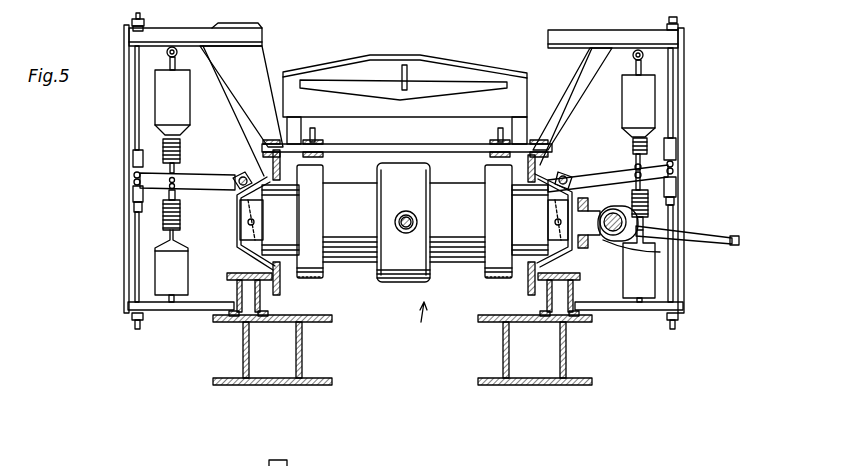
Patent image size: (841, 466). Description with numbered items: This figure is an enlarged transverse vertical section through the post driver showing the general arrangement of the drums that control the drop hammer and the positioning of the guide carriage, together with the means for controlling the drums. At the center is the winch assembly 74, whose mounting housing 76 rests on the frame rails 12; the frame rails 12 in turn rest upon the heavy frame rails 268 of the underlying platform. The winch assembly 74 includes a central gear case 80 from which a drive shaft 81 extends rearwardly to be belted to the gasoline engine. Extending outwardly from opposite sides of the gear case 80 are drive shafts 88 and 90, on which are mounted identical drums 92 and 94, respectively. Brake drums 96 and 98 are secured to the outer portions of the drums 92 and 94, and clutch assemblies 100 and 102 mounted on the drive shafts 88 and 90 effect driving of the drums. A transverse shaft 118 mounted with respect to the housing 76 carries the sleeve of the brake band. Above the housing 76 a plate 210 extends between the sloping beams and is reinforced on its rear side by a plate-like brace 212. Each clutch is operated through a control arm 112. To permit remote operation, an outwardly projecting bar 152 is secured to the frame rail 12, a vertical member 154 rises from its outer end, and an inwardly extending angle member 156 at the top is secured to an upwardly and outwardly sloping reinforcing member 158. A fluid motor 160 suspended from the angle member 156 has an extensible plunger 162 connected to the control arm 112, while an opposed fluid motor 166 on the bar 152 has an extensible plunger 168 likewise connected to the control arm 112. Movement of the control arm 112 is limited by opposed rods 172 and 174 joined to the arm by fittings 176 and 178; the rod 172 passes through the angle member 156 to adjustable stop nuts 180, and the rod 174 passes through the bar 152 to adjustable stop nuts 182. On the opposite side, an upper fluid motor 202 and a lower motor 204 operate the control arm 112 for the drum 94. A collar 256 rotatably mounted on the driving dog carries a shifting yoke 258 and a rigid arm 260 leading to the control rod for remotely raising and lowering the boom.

The frame rails 12 is at (237, 291).
The winch assembly 74 is at (416, 323).
The mounting housing 76 is at (529, 280).
The central gear case 80 is at (396, 284).
The drive shaft 81 is at (410, 201).
The drive shaft 88 is at (245, 231).
The drive shaft 90 is at (592, 215).
The drum 92 is at (375, 240).
The drum 94 is at (466, 250).
The brake drum 96 is at (315, 280).
The brake drum 98 is at (492, 284).
The clutch assembly 100 is at (268, 224).
The clutch assembly 102 is at (545, 236).
The control arm 112 is at (212, 183).
The transverse shaft 118 is at (416, 152).
The bar 152 is at (193, 312).
The vertical member 154 is at (125, 275).
The angle member 156 is at (155, 36).
The reinforcing member 158 is at (258, 30).
The fluid motor 160 is at (185, 98).
The extensible plunger 162 is at (183, 171).
The fluid motor 166 is at (180, 283).
The extensible plunger 168 is at (177, 197).
The rod 172 is at (135, 128).
The rod 174 is at (135, 245).
The fitting 176 is at (133, 160).
The fitting 178 is at (133, 188).
The adjustable stop nuts 180 is at (132, 27).
The adjustable stop nuts 182 is at (134, 323).
The upper fluid motor 202 is at (631, 89).
The lower motor 204 is at (632, 275).
The plate 210 is at (450, 70).
The plate-like brace 212 is at (440, 88).
The collar 256 is at (607, 243).
The shifting yoke 258 is at (660, 252).
The rigid arm 260 is at (697, 233).
The frame rails 268 is at (297, 385).